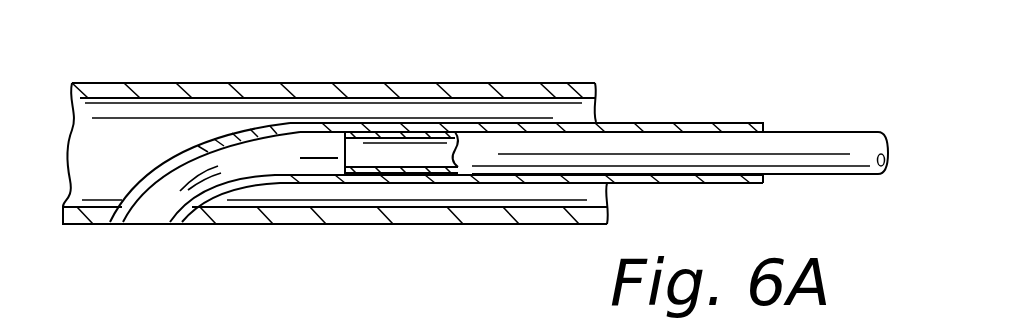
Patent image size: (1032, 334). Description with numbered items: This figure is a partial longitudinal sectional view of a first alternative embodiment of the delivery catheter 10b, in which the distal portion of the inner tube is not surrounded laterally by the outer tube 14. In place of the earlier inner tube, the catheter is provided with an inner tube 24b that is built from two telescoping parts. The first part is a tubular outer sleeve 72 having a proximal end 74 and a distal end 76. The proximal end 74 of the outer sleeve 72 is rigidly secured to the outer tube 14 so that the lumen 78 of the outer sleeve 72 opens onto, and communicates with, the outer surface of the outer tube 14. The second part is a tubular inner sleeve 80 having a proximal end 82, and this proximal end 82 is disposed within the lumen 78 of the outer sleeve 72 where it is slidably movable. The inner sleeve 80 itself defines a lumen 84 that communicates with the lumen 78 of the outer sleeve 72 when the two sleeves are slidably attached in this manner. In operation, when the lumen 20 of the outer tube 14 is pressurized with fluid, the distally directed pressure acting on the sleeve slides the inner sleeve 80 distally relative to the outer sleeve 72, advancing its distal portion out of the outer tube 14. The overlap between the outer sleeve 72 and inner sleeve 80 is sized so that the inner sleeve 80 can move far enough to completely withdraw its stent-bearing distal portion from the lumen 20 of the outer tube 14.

The delivery catheter 10b is at (575, 64).
The outer tube 14 is at (603, 78).
The lumen of the outer tube 20 is at (106, 178).
The inner tube 24b is at (448, 122).
The outer sleeve 72 is at (259, 188).
The proximal end of the outer sleeve 74 is at (116, 232).
The distal end of the outer sleeve 76 is at (772, 118).
The lumen of the outer sleeve 78 is at (200, 178).
The inner sleeve 80 is at (822, 128).
The proximal end of the inner sleeve 82 is at (335, 126).
The lumen of the inner sleeve 84 is at (412, 152).